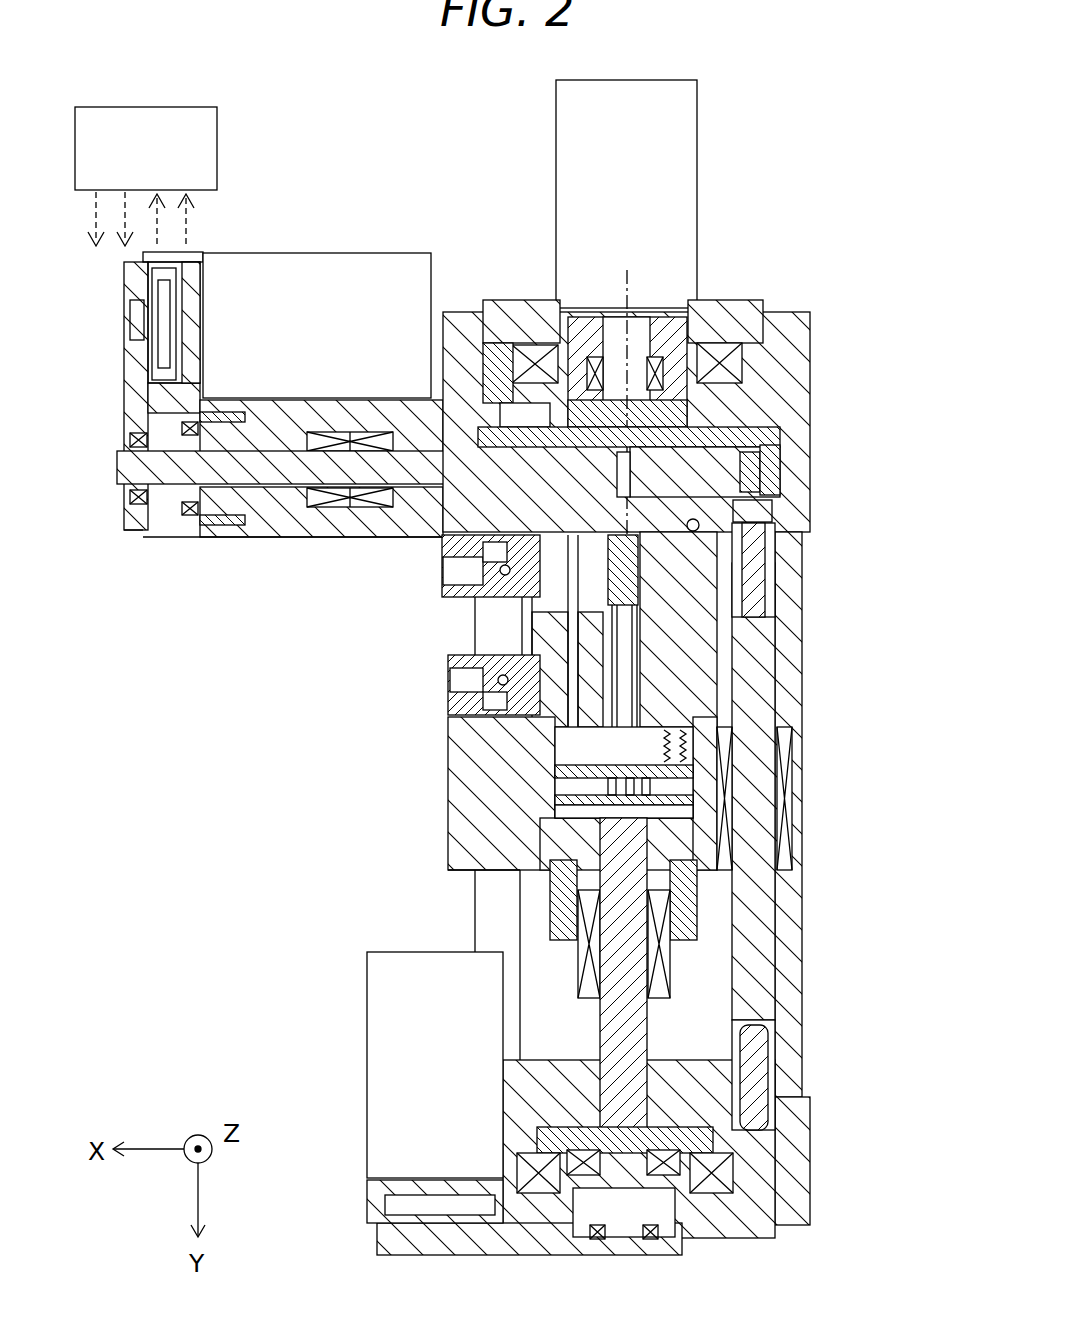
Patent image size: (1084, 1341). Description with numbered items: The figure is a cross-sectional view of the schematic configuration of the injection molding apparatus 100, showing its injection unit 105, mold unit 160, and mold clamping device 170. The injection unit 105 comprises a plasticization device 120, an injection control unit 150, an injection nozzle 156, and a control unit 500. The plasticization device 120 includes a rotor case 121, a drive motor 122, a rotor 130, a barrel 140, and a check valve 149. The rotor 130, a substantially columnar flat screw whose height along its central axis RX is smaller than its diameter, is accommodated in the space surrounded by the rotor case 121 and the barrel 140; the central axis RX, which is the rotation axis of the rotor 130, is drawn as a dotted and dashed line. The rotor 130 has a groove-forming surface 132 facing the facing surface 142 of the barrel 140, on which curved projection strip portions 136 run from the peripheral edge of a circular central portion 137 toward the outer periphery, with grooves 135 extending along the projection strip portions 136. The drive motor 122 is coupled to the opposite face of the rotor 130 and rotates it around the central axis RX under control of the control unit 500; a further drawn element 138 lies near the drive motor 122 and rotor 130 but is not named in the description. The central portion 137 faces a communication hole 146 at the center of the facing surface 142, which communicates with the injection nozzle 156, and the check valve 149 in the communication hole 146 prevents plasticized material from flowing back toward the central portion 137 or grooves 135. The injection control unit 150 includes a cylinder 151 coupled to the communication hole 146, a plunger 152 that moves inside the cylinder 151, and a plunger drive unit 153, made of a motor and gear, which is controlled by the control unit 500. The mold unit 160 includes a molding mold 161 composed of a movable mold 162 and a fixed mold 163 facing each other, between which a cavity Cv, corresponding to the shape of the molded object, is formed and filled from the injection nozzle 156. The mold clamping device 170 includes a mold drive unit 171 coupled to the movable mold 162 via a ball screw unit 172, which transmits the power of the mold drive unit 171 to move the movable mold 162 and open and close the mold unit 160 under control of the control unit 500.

The injection molding apparatus 100 is at (198, 154).
The control unit 500 is at (217, 146).
The injection unit 105 is at (525, 667).
The plasticization device 120 is at (639, 737).
The rotor case 121 is at (770, 385).
The drive motor 122 is at (695, 300).
The rotor 130 is at (627, 367).
The groove-forming surface 132 is at (640, 437).
The groove 135 is at (762, 350).
The projection strip portion 136 is at (540, 430).
The central portion 137 is at (548, 412).
The rotary joint bearing 138 is at (640, 400).
The barrel 140 is at (763, 439).
The facing surface 142 is at (770, 420).
The communication hole 146 is at (742, 492).
The check valve 149 is at (660, 430).
The central axis RX is at (630, 285).
The injection control unit 150 is at (367, 421).
The cylinder 151 is at (465, 522).
The plunger 152 is at (280, 490).
The plunger drive unit 153 is at (312, 266).
The injection nozzle 156 is at (705, 565).
The mold unit 160 is at (418, 625).
The molding mold 161 is at (431, 625).
The movable mold 162 is at (535, 640).
The fixed mold 163 is at (535, 605).
The cavity Cv is at (640, 618).
The mold clamping device 170 is at (573, 1028).
The mold drive unit 171 is at (368, 1060).
The ball screw unit 172 is at (635, 1022).